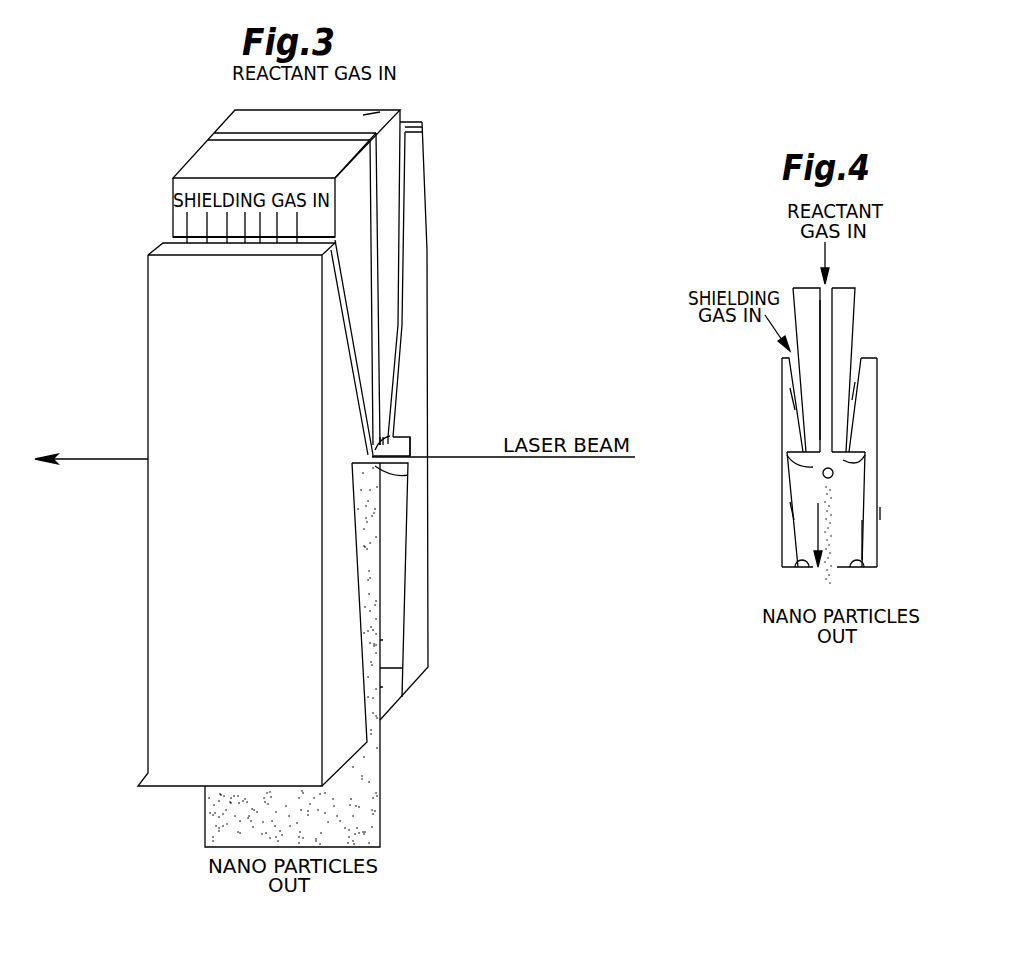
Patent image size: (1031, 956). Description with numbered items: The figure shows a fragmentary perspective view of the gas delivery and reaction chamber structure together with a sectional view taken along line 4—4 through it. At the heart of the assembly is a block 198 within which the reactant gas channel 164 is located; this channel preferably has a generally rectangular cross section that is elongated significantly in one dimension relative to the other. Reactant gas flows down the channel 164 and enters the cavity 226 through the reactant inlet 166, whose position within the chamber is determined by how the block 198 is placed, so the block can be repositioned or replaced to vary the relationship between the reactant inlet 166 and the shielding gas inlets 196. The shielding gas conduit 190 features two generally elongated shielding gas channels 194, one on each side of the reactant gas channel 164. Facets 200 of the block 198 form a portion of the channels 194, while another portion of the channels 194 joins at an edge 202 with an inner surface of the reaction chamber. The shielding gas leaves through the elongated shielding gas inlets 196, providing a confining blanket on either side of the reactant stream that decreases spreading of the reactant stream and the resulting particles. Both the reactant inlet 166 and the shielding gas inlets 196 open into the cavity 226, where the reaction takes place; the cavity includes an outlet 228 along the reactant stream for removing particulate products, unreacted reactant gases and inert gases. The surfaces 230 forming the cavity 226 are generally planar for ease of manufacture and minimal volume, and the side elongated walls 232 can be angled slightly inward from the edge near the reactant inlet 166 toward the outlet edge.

In FIG. 3, the section line 4— 4 is at (363, 115).
In FIG. 3, the reactant gas channel 164 is at (223, 148).
In FIG. 4, the reactant gas channel 164 is at (827, 292).
In FIG. 3, the reactant inlet 166 is at (385, 435).
In FIG. 4, the reactant inlet 166 is at (837, 470).
In FIG. 3, the shielding gas conduit 190 is at (413, 255).
In FIG. 4, the shielding gas conduit 190 is at (877, 403).
In FIG. 3, the shielding gas channels 194 is at (407, 152).
In FIG. 4, the shielding gas channels 194 is at (862, 357).
In FIG. 3, the shielding gas inlets 196 is at (408, 445).
In FIG. 4, the shielding gas inlets 196 is at (813, 467).
In FIG. 3, the block 198 is at (390, 132).
In FIG. 4, the block 198 is at (853, 313).
In FIG. 3, the facets 200 is at (337, 270).
In FIG. 4, the facets 200 is at (855, 382).
In FIG. 3, the edge 202 is at (398, 437).
In FIG. 4, the edge 202 is at (787, 455).
In FIG. 3, the cavity 226 is at (393, 512).
In FIG. 4, the cavity 226 is at (848, 527).
In FIG. 3, the outlet 228 is at (410, 437).
In FIG. 4, the outlet 228 is at (780, 423).
In FIG. 3, the surfaces forming cavity 230 is at (397, 640).
In FIG. 4, the surfaces forming cavity 230 is at (795, 540).
In FIG. 4, the side elongated walls 232 is at (790, 502).